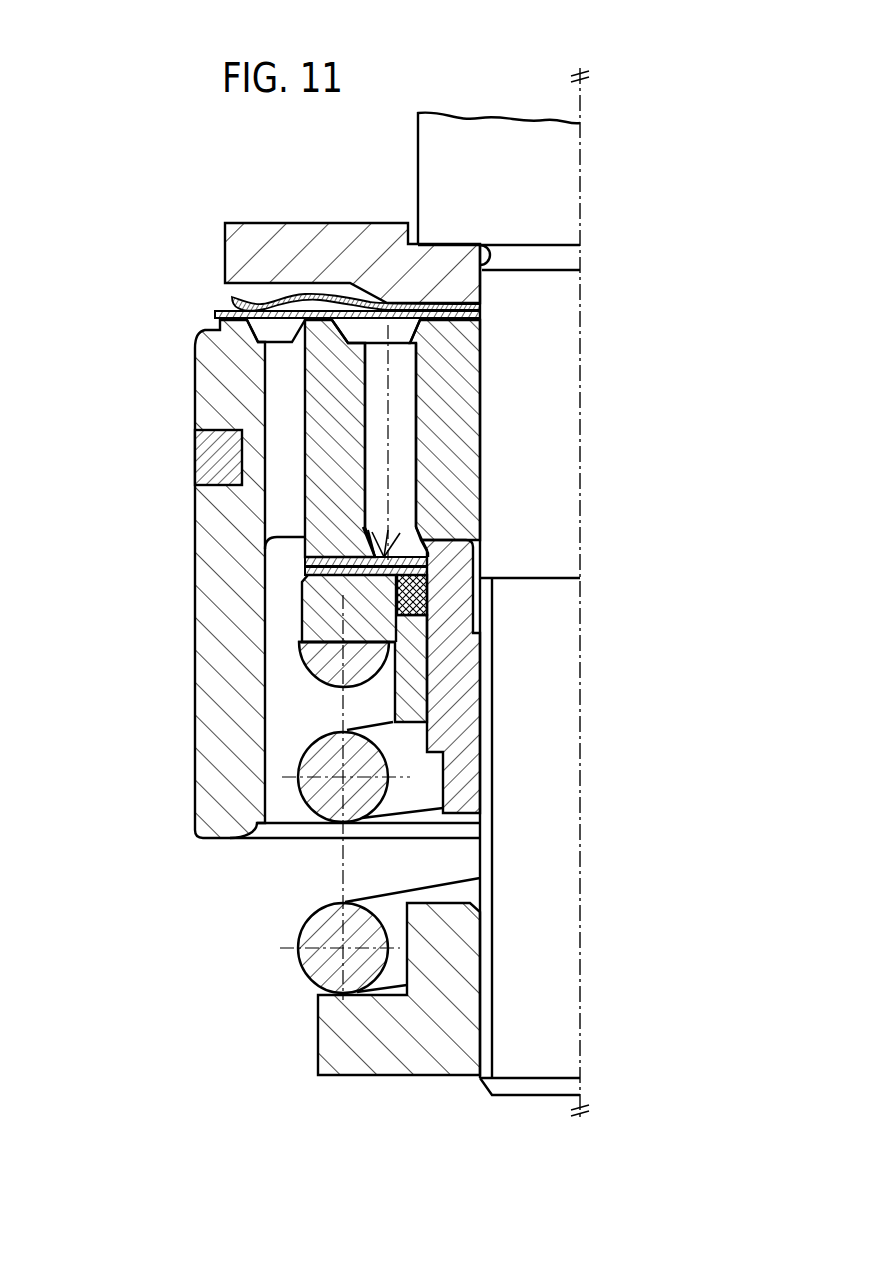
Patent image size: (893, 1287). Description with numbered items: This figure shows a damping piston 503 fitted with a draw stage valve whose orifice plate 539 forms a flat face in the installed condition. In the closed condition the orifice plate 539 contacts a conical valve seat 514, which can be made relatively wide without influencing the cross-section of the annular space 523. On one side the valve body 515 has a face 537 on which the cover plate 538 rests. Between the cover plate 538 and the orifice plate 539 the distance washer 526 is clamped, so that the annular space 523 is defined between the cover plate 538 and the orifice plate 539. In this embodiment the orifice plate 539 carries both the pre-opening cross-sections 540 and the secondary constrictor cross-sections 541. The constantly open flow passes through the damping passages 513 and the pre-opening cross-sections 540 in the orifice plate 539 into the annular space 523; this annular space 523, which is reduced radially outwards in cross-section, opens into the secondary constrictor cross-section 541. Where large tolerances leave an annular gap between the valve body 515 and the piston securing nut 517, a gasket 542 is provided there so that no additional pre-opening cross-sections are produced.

The piston 503 is at (228, 742).
The damping passages 513 is at (377, 368).
The valve seat 514 is at (305, 559).
The secondary constrictor cross-sections 541 is at (307, 568).
The cover plate 538 is at (320, 600).
The valve body 515 is at (385, 566).
The face 537 is at (302, 622).
The orifice plate 539 is at (390, 537).
The annular space 523 is at (378, 560).
The pre-opening cross-sections 540 is at (430, 557).
The distance washer 526 is at (430, 570).
The gasket 542 is at (430, 598).
The piston securing nut 517 is at (460, 697).